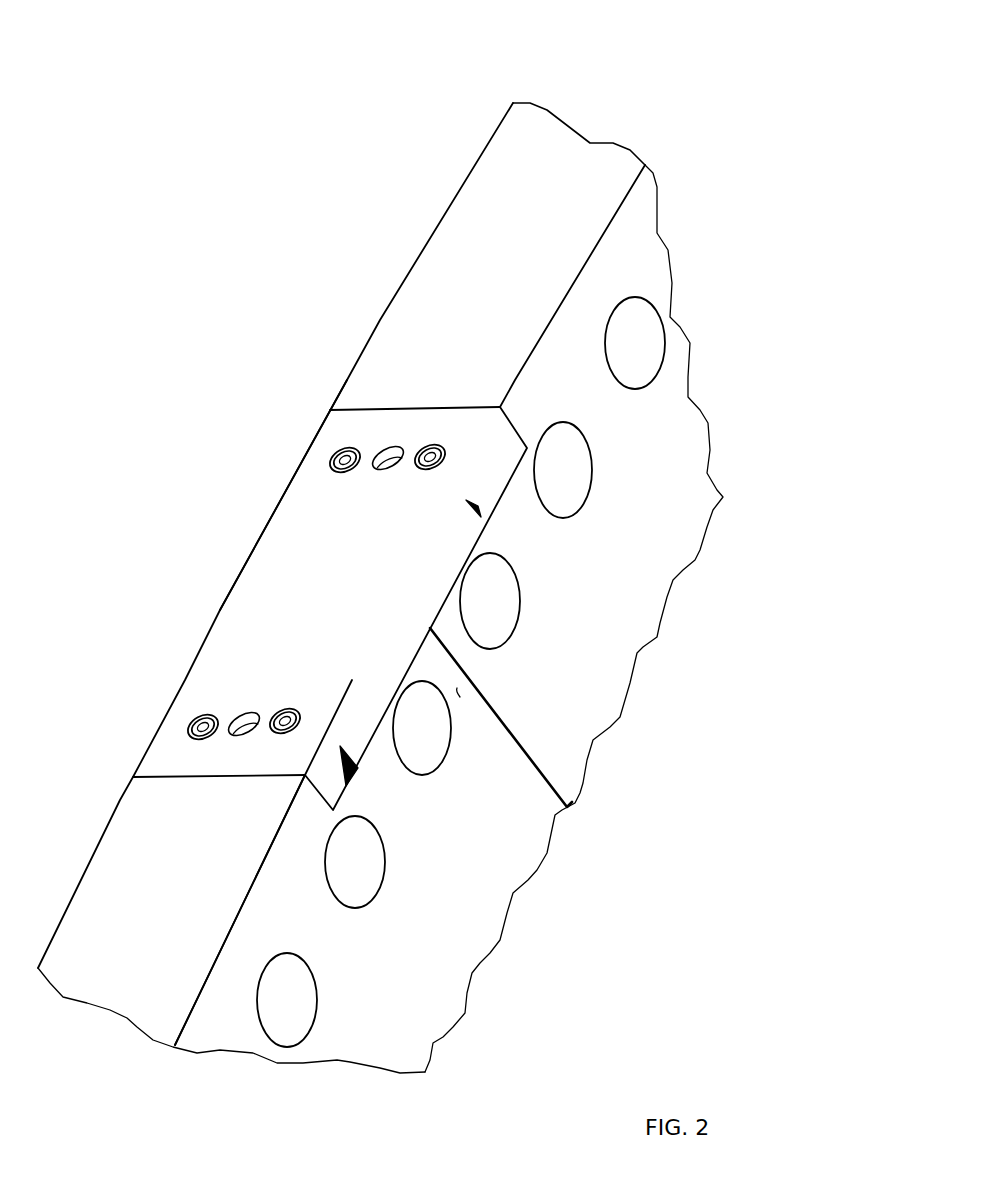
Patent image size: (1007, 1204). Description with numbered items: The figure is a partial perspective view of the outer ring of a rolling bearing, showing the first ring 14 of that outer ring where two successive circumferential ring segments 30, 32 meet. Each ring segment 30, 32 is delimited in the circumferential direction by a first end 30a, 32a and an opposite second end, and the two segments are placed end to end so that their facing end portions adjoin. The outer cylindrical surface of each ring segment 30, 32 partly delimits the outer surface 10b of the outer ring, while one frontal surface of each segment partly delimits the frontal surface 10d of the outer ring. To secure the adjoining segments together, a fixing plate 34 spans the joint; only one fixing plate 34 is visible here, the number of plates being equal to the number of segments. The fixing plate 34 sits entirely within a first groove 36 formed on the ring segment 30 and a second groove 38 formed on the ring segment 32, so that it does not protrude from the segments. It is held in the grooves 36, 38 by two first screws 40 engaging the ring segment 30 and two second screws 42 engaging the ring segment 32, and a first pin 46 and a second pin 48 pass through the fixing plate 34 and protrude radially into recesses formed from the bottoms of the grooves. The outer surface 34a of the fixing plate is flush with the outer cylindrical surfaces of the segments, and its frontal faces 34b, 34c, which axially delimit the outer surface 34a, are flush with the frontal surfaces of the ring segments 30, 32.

The first ring 14 is at (553, 56).
The outer surface 10b is at (540, 193).
The ring segment 30 is at (658, 250).
The first end 30a is at (460, 697).
The ring segment 32 is at (226, 1036).
The first end 32a is at (512, 732).
The fixing plate 34 is at (456, 595).
The outer surface 34a is at (347, 585).
The frontal face 34b is at (425, 582).
The frontal face 34c is at (247, 553).
The first groove 36 is at (470, 505).
The second groove 38 is at (357, 767).
The first screws 40 is at (427, 450).
The second screws 42 is at (280, 712).
The first pin 46 is at (372, 472).
The second pin 48 is at (235, 740).
The frontal surface 10d is at (432, 987).